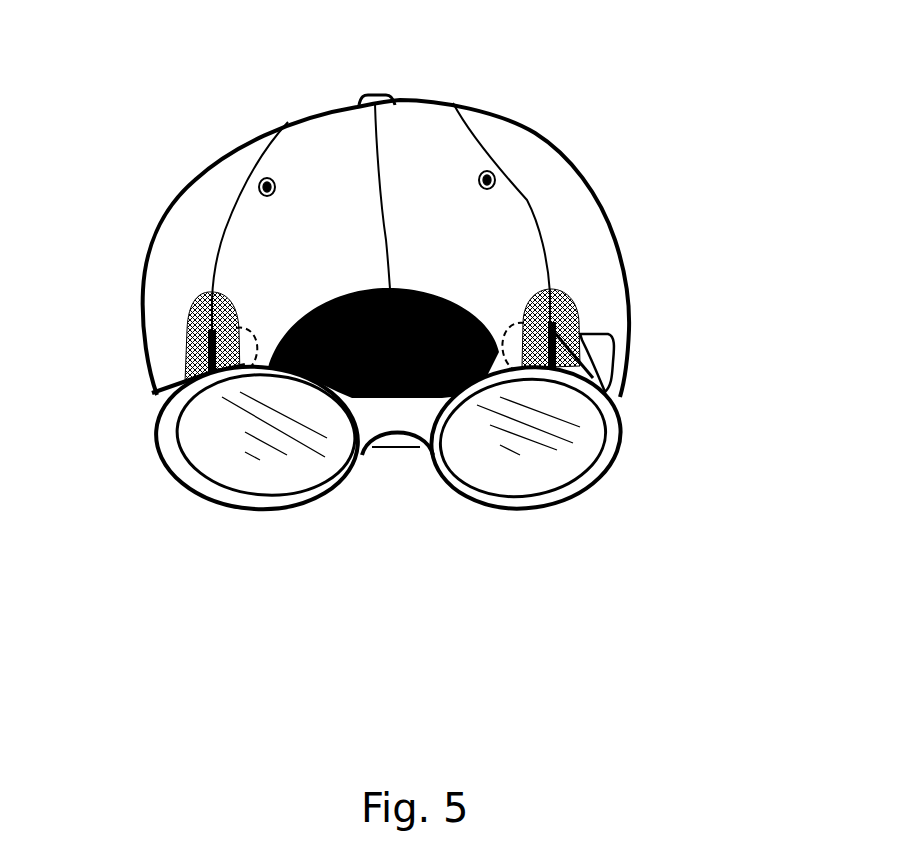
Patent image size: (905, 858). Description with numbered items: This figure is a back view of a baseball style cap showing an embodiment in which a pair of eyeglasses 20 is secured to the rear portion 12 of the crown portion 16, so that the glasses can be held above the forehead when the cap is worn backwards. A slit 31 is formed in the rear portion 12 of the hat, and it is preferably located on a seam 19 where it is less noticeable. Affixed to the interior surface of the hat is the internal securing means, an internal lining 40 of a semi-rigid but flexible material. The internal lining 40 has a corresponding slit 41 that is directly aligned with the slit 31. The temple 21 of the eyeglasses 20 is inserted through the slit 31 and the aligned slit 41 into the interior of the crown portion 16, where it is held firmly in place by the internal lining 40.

The rear portion 12 is at (447, 245).
The crown portion 16 is at (527, 118).
The seam 19 is at (372, 158).
The eyeglasses 20 is at (548, 440).
The temple 21 is at (202, 364).
The slit 31 is at (568, 320).
The internal lining 40 is at (574, 332).
The corresponding slit 41 is at (582, 333).